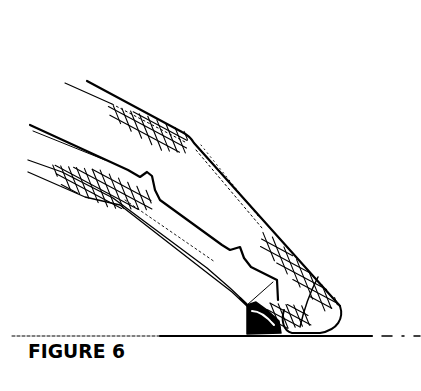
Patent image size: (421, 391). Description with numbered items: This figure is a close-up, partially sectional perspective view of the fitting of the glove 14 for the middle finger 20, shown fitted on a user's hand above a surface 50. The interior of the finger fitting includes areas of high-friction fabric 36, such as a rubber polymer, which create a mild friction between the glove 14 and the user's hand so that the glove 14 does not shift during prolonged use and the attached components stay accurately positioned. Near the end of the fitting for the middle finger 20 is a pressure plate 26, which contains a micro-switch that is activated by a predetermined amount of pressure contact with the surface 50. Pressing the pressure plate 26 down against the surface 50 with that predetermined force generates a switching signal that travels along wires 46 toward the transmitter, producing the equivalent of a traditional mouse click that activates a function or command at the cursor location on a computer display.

The glove 14 is at (100, 87).
The middle finger 20 is at (328, 302).
The pressure plate 26 is at (273, 336).
The high-friction fabric 36 is at (150, 127).
The wires 46 is at (172, 210).
The surface 50 is at (362, 330).